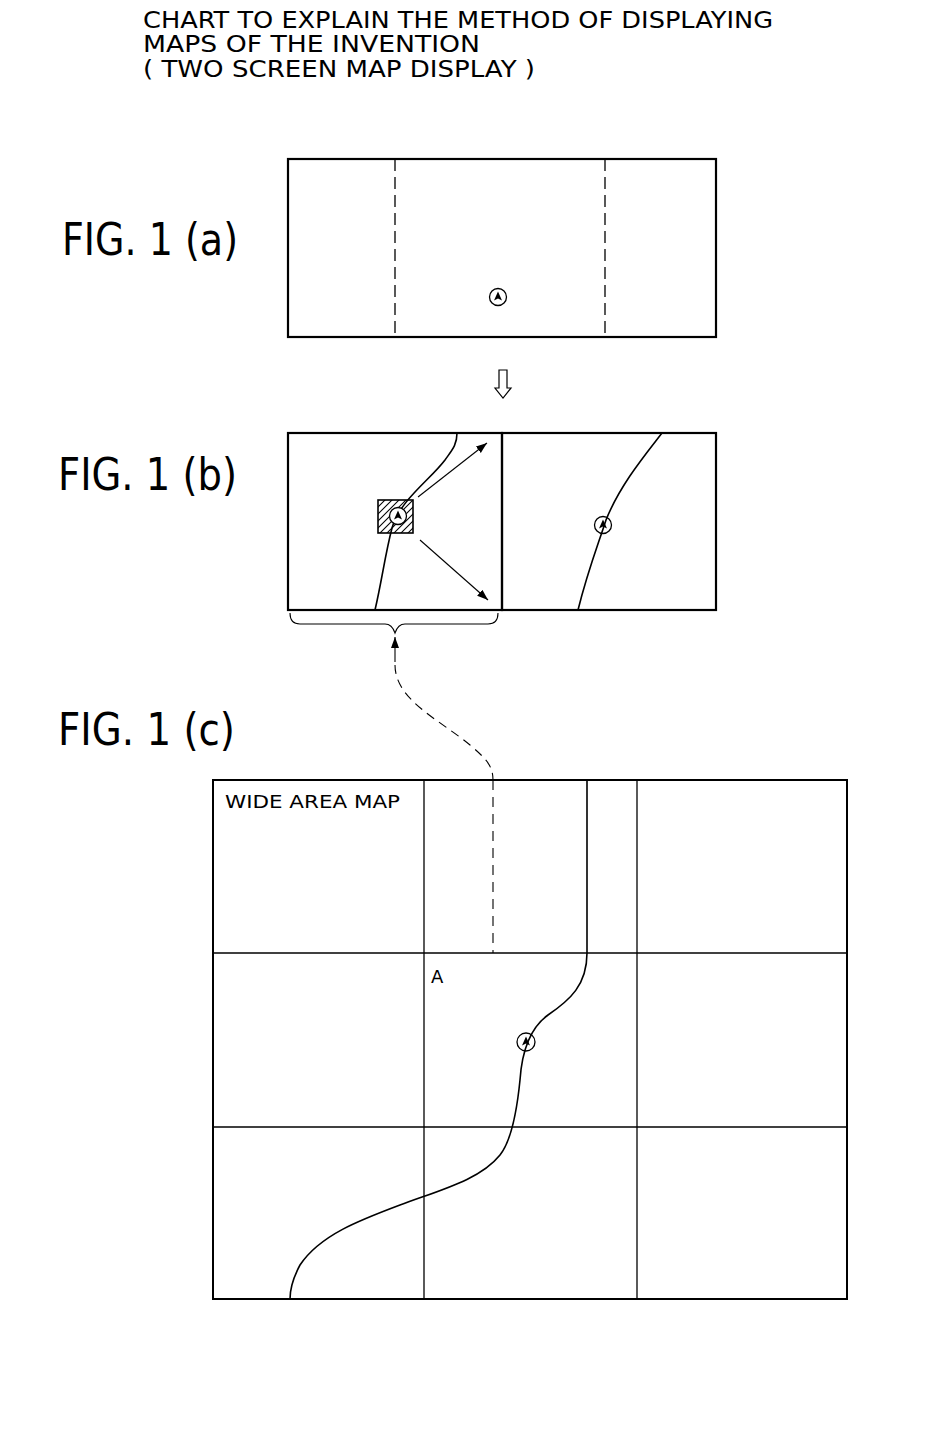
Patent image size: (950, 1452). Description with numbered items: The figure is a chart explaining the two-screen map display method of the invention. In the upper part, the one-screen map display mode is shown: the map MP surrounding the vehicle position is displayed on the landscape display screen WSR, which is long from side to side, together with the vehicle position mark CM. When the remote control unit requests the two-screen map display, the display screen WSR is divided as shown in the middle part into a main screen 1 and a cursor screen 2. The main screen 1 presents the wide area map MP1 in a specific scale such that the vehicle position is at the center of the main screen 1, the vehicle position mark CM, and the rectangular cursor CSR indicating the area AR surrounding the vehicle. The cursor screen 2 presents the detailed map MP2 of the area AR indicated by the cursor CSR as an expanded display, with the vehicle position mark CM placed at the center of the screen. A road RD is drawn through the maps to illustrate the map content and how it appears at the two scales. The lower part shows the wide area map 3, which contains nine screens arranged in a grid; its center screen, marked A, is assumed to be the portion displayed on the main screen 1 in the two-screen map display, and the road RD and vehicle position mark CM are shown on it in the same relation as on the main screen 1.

In FIG. 1B, the main screen 1 is at (308, 433).
In FIG. 1B, the cursor screen 2 is at (610, 433).
In FIG. 1C, the wide area map 3 is at (745, 780).
In FIG. 1A, the landscape display screen WSR is at (718, 230).
In FIG. 1B, the landscape display screen WSR is at (553, 491).
In FIG. 1A, the map MP is at (577, 178).
In FIG. 1B, the wide area map MP1 is at (296, 506).
In FIG. 1B, the detailed map MP2 is at (707, 557).
In FIG. 1A, the vehicle position mark CM is at (507, 296).
In FIG. 1B, the vehicle position mark CM is at (378, 515).
In FIG. 1C, the vehicle position mark CM is at (535, 1045).
In FIG. 1B, the area AR is at (413, 512).
In FIG. 1B, the cursor CSR is at (378, 530).
In FIG. 1B, the road RD is at (378, 592).
In FIG. 1C, the road RD is at (587, 812).